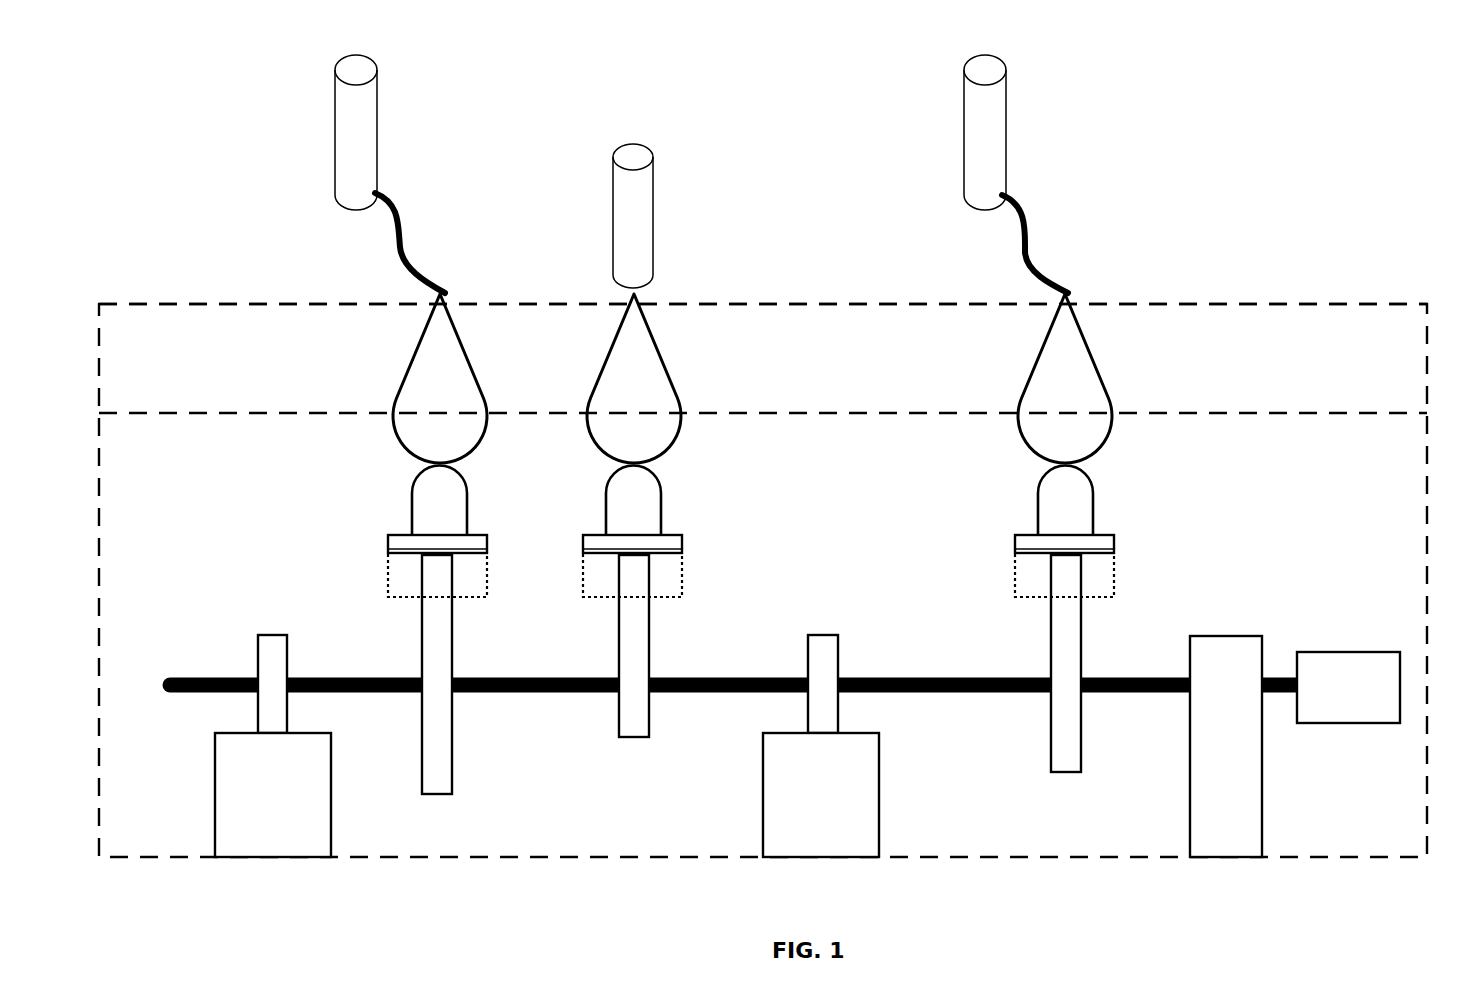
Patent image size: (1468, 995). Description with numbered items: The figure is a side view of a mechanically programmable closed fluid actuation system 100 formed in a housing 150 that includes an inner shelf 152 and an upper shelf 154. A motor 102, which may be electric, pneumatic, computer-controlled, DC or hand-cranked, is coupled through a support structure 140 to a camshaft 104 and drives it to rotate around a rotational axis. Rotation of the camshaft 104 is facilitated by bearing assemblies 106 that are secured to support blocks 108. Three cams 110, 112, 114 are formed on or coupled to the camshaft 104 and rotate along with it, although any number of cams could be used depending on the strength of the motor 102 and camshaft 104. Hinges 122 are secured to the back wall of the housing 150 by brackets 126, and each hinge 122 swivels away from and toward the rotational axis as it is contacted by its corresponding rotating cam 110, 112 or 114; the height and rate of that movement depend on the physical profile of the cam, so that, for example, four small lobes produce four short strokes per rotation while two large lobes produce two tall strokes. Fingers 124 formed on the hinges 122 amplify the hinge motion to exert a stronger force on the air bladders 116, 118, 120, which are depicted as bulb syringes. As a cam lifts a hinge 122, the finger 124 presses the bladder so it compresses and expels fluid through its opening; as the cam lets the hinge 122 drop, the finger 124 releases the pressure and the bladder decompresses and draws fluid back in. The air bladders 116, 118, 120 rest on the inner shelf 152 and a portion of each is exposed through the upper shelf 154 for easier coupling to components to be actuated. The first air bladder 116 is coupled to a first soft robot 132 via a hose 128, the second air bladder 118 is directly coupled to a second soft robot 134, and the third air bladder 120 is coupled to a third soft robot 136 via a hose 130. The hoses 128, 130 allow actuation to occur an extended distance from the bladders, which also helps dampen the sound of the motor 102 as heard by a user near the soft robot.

The mechanically programmable closed fluid actuation system 100 is at (158, 123).
The motor 102 is at (1340, 652).
The camshaft 104 is at (925, 677).
The bearing assembly 106 is at (272, 635).
The support block 108 is at (331, 793).
The cam 110 is at (453, 662).
The cam 112 is at (649, 662).
The cam 114 is at (1081, 663).
The first air bladder 116 is at (408, 363).
The second air bladder 118 is at (602, 363).
The third air bladder 120 is at (1035, 363).
The hinge 122 is at (398, 534).
The finger 124 is at (467, 516).
The bracket 126 is at (487, 580).
The hose 128 is at (410, 268).
The hose 130 is at (1035, 269).
The first soft robot 132 is at (375, 136).
The second soft robot 134 is at (654, 220).
The third soft robot 136 is at (1006, 136).
The support structure 140 is at (1230, 636).
The housing 150 is at (1384, 858).
The inner shelf 152 is at (1323, 411).
The upper shelf 154 is at (1328, 302).